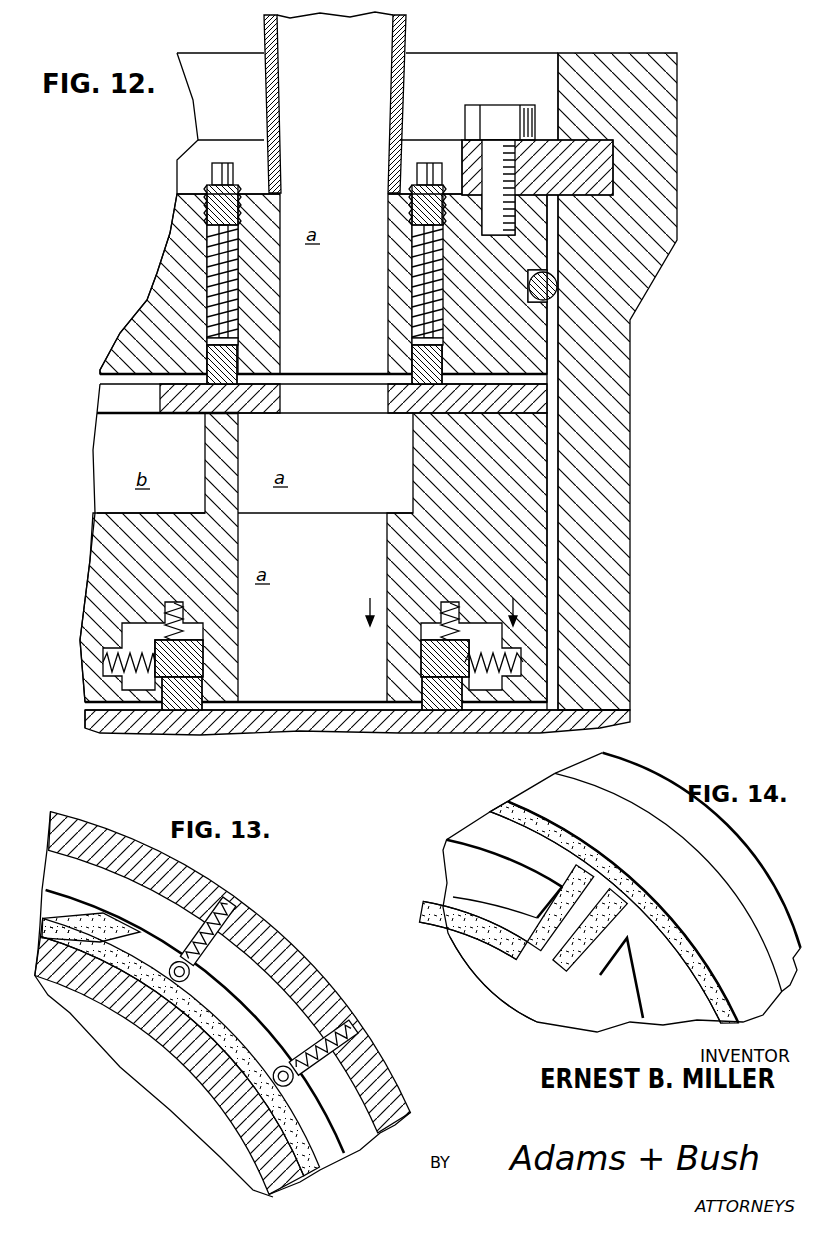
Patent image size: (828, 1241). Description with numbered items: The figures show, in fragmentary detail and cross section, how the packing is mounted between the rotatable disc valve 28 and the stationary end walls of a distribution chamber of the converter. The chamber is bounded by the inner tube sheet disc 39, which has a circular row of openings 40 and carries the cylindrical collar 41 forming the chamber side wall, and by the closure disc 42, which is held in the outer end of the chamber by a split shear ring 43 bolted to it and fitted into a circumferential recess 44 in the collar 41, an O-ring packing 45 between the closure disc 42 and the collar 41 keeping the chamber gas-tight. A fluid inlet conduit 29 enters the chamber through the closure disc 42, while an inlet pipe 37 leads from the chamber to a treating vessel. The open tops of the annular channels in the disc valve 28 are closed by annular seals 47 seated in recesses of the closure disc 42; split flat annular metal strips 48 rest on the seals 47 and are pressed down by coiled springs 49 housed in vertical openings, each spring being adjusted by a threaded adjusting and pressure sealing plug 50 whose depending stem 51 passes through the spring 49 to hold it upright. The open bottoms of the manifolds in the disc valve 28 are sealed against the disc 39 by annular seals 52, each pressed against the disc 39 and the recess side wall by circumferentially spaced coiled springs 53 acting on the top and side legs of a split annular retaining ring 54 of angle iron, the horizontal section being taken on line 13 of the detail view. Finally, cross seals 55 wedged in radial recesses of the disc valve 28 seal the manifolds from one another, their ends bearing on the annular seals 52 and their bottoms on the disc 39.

In FIG. 12, the section line 13— 13 is at (440, 612).
In FIG. 12, the double-faced rotatable disc valve 28 is at (450, 470).
In FIG. 13, the double-faced rotatable disc valve 28 is at (313, 957).
In FIG. 14, the double-faced rotatable disc valve 28 is at (650, 795).
In FIG. 12, the fluid inlet conduit 29 is at (406, 47).
In FIG. 12, the inlet pipe 37 is at (243, 733).
In FIG. 12, the inner tube sheet disc 39 is at (513, 735).
In FIG. 12, the circular openings 40 is at (218, 733).
In FIG. 12, the cylindrical collar 41 is at (632, 479).
In FIG. 12, the closure disc 42 is at (492, 360).
In FIG. 12, the split shear ring 43 is at (613, 172).
In FIG. 12, the circumferential recess 44 is at (613, 138).
In FIG. 12, the O-ring packing 45 is at (557, 284).
In FIG. 12, the annular seal 47 is at (237, 362).
In FIG. 12, the split flat annular metal strip 48 is at (238, 341).
In FIG. 12, the coiled spring 49 is at (238, 288).
In FIG. 12, the adjusting and pressure sealing plug 50 is at (224, 163).
In FIG. 12, the depending stem 51 is at (207, 268).
In FIG. 12, the annular seal 52 is at (205, 680).
In FIG. 13, the annular seal 52 is at (118, 923).
In FIG. 14, the annular seal 52 is at (443, 851).
In FIG. 12, the coiled spring 53 is at (125, 623).
In FIG. 13, the coiled spring 53 is at (205, 952).
In FIG. 12, the split annular retaining ring 54 is at (183, 632).
In FIG. 13, the split annular retaining ring 54 is at (263, 1030).
In FIG. 14, the cross seal 55 is at (563, 1027).